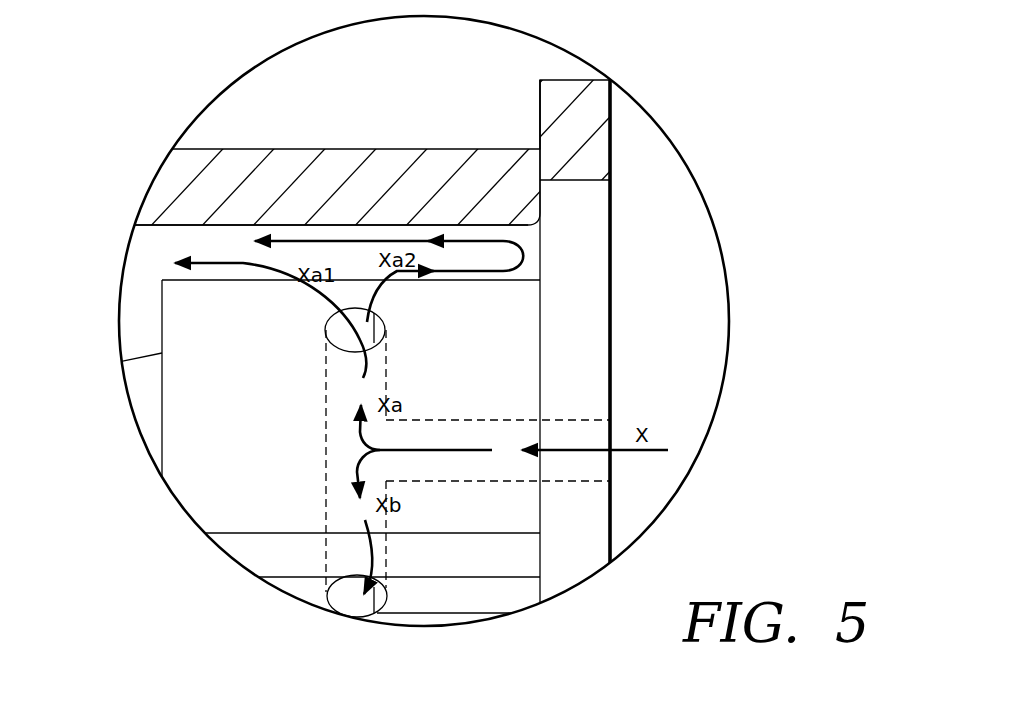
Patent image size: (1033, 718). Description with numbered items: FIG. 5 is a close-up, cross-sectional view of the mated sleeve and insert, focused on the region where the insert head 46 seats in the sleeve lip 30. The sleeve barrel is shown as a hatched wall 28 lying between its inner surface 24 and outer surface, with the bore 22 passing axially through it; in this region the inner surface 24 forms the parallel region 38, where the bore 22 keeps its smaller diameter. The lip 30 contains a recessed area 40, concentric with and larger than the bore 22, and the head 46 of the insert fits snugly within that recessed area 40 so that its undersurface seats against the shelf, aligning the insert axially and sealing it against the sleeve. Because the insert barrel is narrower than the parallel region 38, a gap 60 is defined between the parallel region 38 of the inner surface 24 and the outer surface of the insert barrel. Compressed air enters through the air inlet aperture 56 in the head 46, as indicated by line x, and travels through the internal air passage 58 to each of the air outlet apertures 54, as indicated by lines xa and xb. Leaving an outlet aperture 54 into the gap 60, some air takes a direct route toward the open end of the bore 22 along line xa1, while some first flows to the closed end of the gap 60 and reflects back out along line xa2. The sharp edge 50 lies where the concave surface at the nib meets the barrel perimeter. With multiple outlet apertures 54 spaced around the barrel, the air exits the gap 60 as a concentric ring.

The bore 22 is at (137, 317).
The inner surface 24 is at (232, 223).
The wall 28 is at (357, 187).
The lip 30 is at (590, 107).
The parallel region 38 is at (283, 223).
The recessed area 40 is at (583, 180).
The head 46 is at (580, 320).
The sharp edge 50 is at (162, 280).
The air outlet apertures 54 is at (386, 330).
The air inlet aperture 56 is at (582, 430).
The internal air passage 58 is at (482, 432).
The gap 60 is at (163, 243).